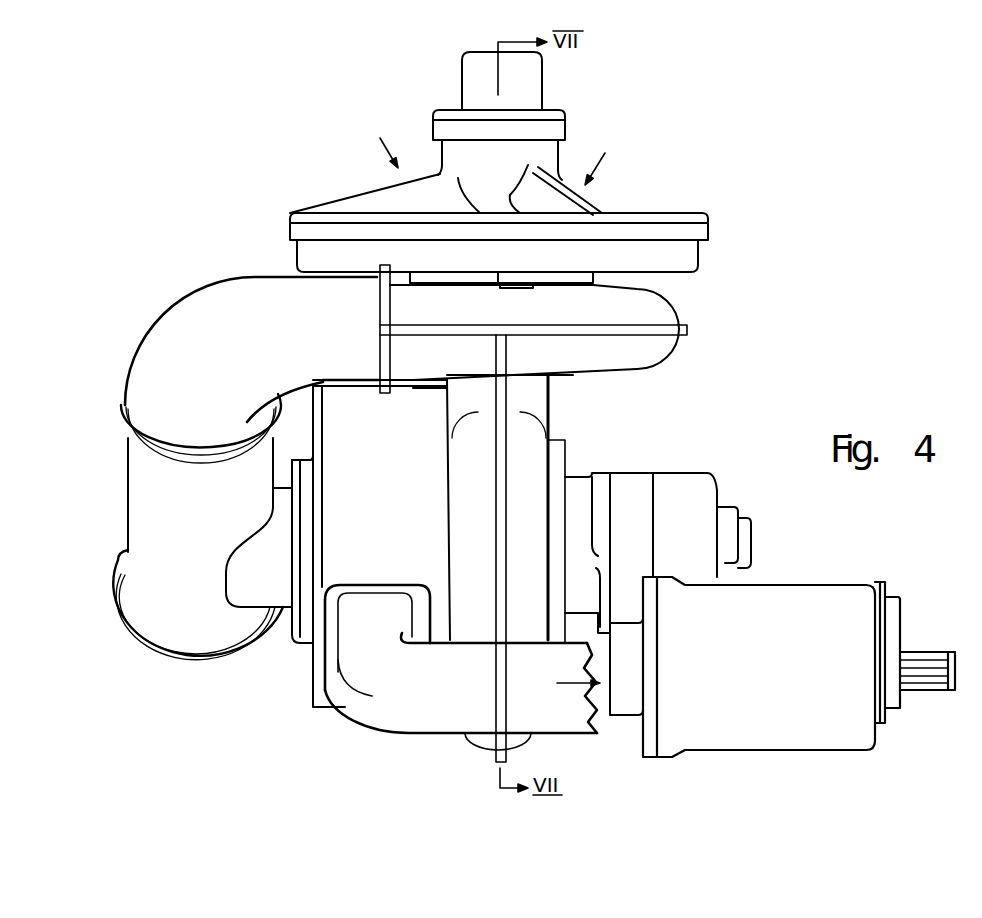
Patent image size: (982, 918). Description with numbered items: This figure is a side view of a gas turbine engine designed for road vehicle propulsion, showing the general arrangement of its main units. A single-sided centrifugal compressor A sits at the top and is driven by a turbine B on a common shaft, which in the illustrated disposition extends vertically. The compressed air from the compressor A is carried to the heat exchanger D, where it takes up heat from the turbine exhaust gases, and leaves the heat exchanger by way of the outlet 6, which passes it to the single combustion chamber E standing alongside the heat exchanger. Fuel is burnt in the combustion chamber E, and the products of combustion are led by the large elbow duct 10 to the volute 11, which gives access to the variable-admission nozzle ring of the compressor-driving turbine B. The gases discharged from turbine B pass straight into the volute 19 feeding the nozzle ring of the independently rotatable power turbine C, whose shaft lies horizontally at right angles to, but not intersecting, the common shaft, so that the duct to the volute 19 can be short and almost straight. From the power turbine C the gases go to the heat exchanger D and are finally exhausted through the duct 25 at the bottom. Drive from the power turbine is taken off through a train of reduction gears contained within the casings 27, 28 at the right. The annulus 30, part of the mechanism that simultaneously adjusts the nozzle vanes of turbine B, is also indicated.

The centrifugal compressor A is at (704, 232).
The compressor-driving turbine B is at (663, 350).
The power turbine C is at (540, 445).
The heat exchanger D is at (397, 541).
The combustion chamber E is at (200, 545).
The outlet 6 is at (265, 593).
The duct 10 is at (195, 298).
The volute 11 is at (623, 358).
The volute 19 is at (540, 478).
The duct 25 is at (512, 703).
The casing 27 is at (683, 482).
The casing 28 is at (777, 685).
The annulus 30 is at (558, 575).